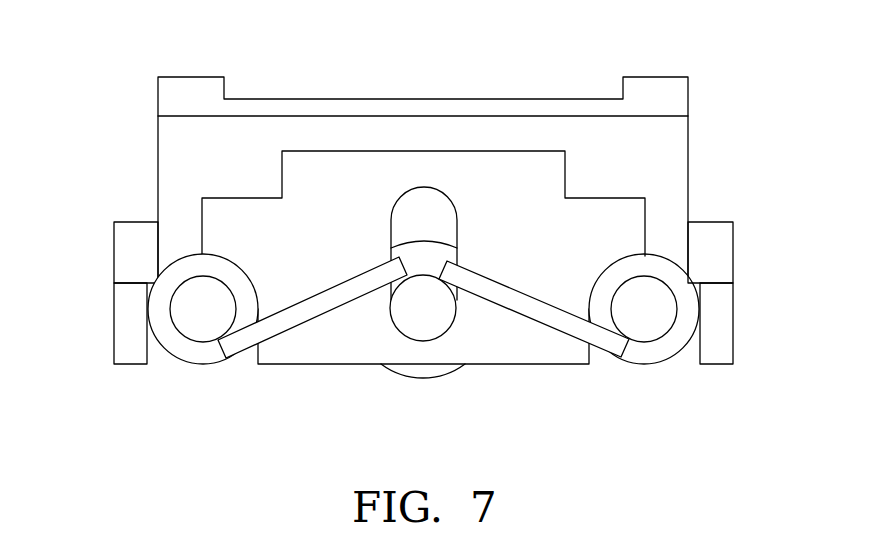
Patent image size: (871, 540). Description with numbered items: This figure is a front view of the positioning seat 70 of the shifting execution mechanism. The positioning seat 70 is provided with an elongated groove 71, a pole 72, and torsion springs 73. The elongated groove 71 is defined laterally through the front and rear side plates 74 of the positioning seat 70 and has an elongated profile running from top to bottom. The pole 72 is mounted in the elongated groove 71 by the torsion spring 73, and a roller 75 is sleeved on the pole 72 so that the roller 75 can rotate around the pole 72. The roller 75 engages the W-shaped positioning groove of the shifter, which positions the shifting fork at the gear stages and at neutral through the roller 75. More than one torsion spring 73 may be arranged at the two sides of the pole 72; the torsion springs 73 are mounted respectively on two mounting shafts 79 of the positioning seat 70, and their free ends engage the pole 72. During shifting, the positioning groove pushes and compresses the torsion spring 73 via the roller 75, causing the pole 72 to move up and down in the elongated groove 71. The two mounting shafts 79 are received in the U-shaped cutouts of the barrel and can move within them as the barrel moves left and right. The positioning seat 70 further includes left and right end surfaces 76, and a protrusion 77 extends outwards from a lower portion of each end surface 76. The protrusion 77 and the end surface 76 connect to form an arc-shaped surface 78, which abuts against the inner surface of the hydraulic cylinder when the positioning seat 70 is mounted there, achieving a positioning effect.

The positioning seat 70 is at (708, 66).
The elongated groove 71 is at (423, 220).
The pole 72 is at (437, 313).
The torsion spring 73 is at (312, 307).
The front and rear side plates 74 is at (515, 222).
The roller 75 is at (413, 370).
The end surface 76 is at (657, 151).
The protrusion 77 is at (722, 330).
The arc-shaped surface 78 is at (717, 249).
The mounting shaft 79 is at (203, 309).